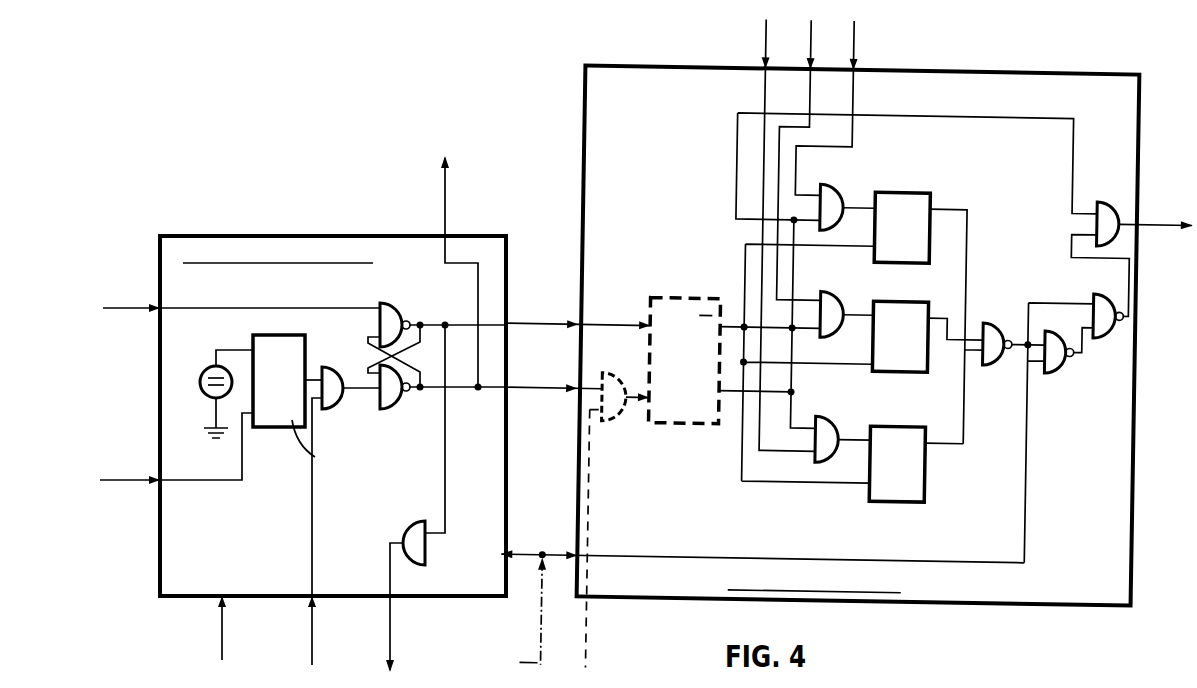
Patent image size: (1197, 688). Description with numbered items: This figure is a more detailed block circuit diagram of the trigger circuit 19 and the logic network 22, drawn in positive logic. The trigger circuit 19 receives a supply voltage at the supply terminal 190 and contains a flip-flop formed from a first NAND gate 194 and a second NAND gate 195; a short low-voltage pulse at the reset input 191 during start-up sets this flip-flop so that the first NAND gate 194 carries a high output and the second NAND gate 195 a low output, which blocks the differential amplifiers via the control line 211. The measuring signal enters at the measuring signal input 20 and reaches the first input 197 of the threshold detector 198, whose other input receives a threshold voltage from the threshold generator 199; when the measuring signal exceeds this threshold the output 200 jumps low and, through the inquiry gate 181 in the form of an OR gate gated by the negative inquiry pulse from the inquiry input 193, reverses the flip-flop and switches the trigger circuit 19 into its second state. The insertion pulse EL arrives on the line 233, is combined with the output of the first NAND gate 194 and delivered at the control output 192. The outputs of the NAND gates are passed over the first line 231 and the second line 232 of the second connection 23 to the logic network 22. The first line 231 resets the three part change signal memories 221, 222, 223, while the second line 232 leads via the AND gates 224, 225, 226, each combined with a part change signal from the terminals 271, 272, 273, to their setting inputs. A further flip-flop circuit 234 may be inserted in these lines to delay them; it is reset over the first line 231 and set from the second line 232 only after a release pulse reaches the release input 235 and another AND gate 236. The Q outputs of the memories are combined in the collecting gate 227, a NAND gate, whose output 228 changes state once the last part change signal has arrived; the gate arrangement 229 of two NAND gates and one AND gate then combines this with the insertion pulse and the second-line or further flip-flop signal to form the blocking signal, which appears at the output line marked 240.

The trigger circuit 19 is at (345, 234).
The measuring signal input 20 is at (123, 478).
The logic network 22 is at (958, 70).
The second connection 23 is at (577, 359).
The inquiry gate 181 is at (337, 408).
The supply terminal 190 is at (221, 642).
The reset input 191 is at (122, 307).
The control output 192 is at (393, 642).
The inquiry input 193 is at (312, 643).
The first NAND gate 194 is at (397, 306).
The second NAND gate 195 is at (397, 410).
The first input of threshold detector 197 is at (242, 443).
The threshold detector 198 is at (253, 340).
The threshold generator 199 is at (200, 374).
The output of threshold detector 200 is at (316, 366).
The control line 211 is at (447, 200).
The part change signal memory 221 is at (889, 426).
The part change signal memory 222 is at (901, 301).
The part change signal memory 223 is at (903, 192).
The AND gate 224 is at (838, 450).
The AND gate 225 is at (838, 327).
The AND gate 226 is at (840, 211).
The collecting gate 227 is at (997, 355).
The output of collecting gate 228 is at (1017, 335).
The gate arrangement 229 is at (1084, 291).
The first line 231 is at (536, 328).
The second line 232 is at (534, 393).
The line 233 is at (548, 653).
The further flip-flop circuit 234 is at (687, 301).
The release input 235 is at (603, 654).
The another AND gate 236 is at (615, 426).
The output line 240 is at (1156, 222).
The terminal 271 is at (760, 39).
The terminal 272 is at (805, 27).
The terminal 273 is at (848, 26).